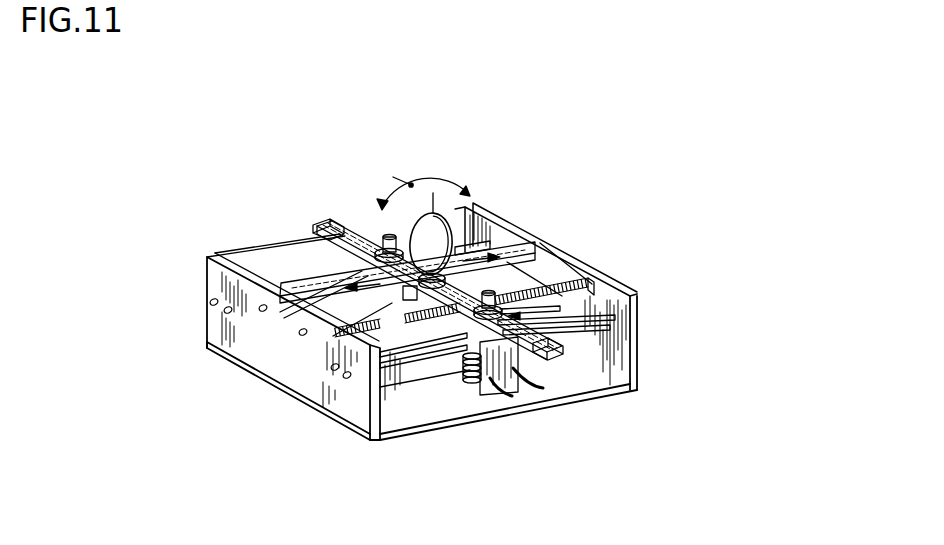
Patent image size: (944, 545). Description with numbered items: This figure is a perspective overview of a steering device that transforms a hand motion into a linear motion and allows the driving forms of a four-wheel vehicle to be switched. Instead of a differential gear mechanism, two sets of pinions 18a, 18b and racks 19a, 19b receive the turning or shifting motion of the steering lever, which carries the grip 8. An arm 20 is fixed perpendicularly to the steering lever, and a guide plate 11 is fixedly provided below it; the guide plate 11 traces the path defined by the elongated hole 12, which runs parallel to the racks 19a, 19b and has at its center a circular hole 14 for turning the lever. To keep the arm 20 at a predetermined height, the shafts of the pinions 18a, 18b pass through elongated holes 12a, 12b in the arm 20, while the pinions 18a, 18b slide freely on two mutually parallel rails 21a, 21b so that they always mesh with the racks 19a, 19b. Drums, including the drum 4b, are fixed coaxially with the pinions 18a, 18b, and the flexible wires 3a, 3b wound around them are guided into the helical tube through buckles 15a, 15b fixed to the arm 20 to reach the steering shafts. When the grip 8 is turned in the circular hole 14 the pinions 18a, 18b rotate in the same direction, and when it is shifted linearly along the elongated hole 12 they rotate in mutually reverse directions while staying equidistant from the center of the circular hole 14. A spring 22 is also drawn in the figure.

The flexible wire 3a is at (327, 267).
The flexible wire 3b is at (531, 386).
The drum 4b is at (462, 370).
The grip 8 is at (440, 233).
The guide plate 11 is at (390, 300).
The elongated hole 12 is at (540, 257).
The elongated hole 12a is at (340, 230).
The elongated hole 12b is at (563, 357).
The circular hole 14 is at (350, 320).
The buckle 15a is at (385, 243).
The buckle 15b is at (497, 300).
The pinion 18a is at (300, 292).
The pinion 18b is at (520, 313).
The rack 19a is at (472, 238).
The rack 19b is at (512, 310).
The arm 20 is at (385, 345).
The rail 21a is at (312, 283).
The rail 21b is at (553, 340).
The spring 22 is at (482, 385).